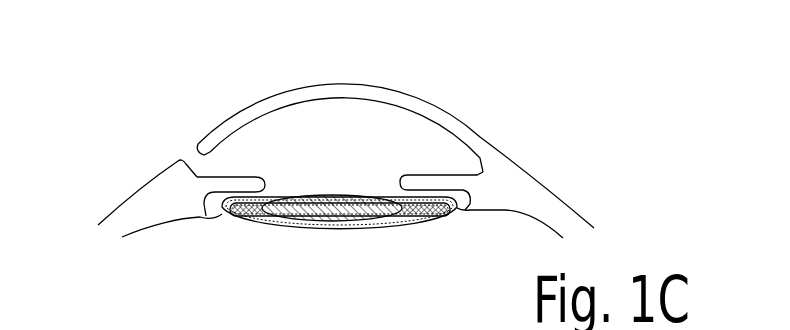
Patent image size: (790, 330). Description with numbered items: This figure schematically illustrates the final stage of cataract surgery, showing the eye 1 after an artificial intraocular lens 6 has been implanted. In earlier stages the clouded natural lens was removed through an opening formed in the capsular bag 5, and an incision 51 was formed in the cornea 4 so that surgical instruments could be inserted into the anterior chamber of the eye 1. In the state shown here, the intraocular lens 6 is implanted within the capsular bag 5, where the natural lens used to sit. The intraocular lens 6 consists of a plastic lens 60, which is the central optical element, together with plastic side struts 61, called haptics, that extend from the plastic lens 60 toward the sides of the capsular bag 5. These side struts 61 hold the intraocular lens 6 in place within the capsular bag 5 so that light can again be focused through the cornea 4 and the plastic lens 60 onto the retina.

The eye 1 is at (125, 75).
The incision 51 is at (178, 127).
The cornea 4 is at (292, 63).
The intraocular lens 6 is at (340, 201).
The capsular bag 5 is at (443, 220).
The plastic lens 60 is at (345, 212).
The plastic side struts 61 is at (253, 216).